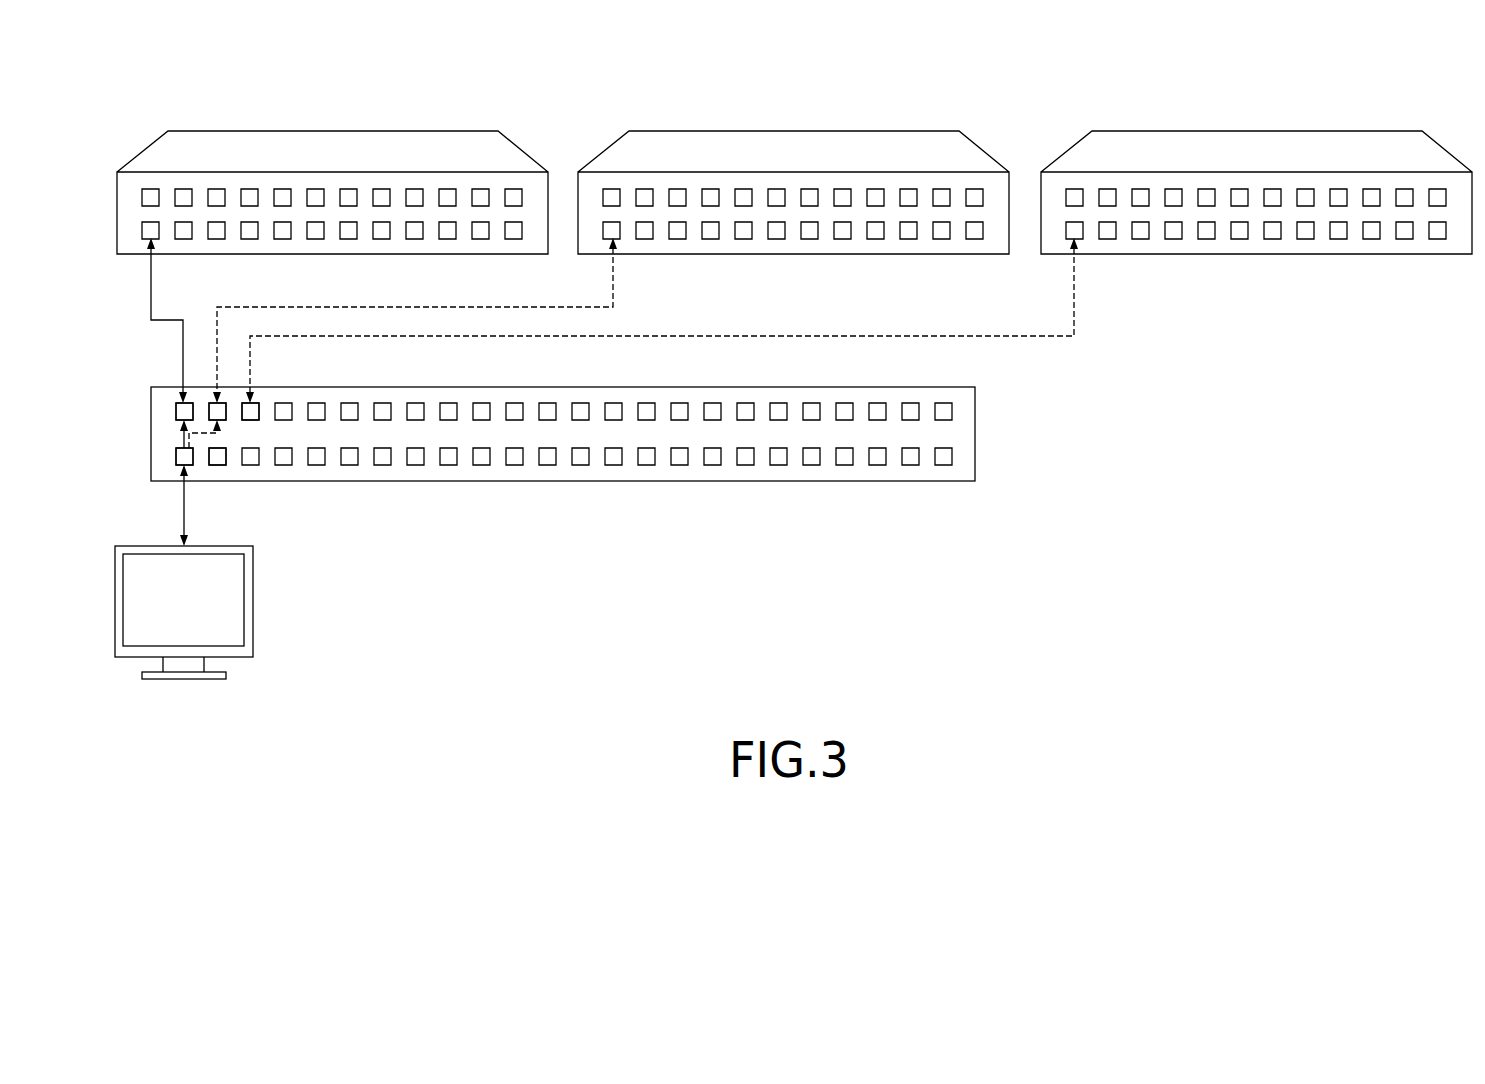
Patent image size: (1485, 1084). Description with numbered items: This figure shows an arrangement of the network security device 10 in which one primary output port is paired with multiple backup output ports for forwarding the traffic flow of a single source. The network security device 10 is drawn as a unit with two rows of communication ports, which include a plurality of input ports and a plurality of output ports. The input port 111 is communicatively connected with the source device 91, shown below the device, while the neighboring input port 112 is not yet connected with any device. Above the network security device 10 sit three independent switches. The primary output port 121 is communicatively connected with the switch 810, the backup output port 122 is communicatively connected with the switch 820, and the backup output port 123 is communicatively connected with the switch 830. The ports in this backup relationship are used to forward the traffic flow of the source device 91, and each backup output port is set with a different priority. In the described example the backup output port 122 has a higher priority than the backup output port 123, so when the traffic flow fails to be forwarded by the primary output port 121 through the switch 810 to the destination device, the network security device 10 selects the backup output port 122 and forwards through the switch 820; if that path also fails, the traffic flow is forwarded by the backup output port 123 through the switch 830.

The network security device 10 is at (563, 392).
The source device 91 is at (253, 602).
The input port 111 is at (176, 458).
The input port 112 is at (226, 458).
The primary output port 121 is at (176, 410).
The backup output port 122 is at (226, 412).
The backup output port 123 is at (259, 410).
The switch 810 is at (331, 137).
The switch 820 is at (793, 137).
The switch 830 is at (1256, 137).